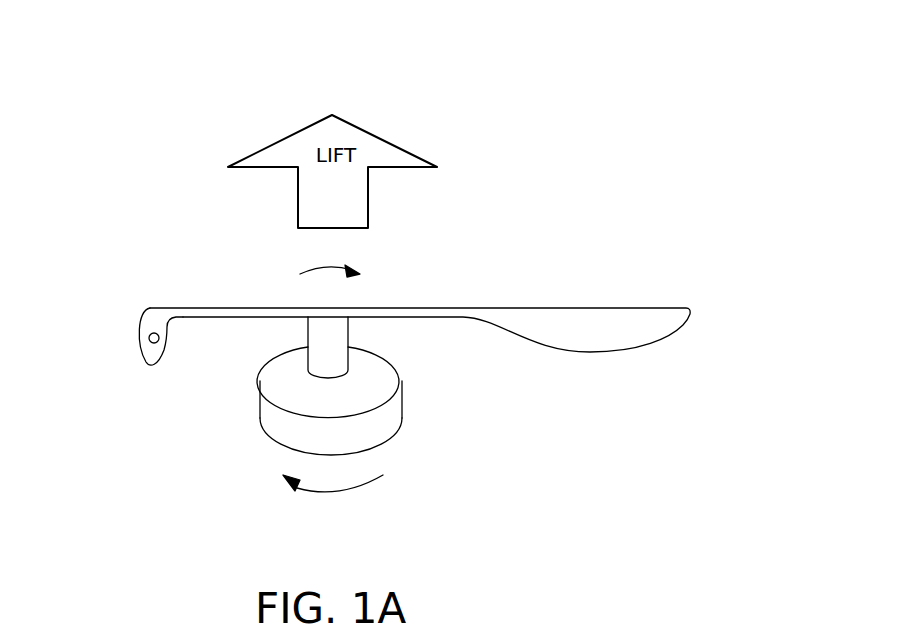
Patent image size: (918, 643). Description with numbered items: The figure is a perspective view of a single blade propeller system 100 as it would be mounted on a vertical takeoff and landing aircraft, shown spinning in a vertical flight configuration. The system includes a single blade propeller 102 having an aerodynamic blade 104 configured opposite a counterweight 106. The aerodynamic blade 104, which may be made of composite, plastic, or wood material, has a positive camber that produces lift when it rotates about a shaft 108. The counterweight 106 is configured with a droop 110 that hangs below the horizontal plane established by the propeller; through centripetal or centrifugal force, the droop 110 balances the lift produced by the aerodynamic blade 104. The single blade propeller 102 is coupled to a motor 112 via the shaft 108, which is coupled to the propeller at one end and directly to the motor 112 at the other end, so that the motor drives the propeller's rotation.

The single blade propeller system 100 is at (530, 62).
The single blade propeller 102 is at (233, 317).
The aerodynamic blade 104 is at (625, 307).
The counterweight 106 is at (149, 308).
The shaft 108 is at (325, 328).
The droop 110 is at (153, 366).
The motor 112 is at (400, 421).